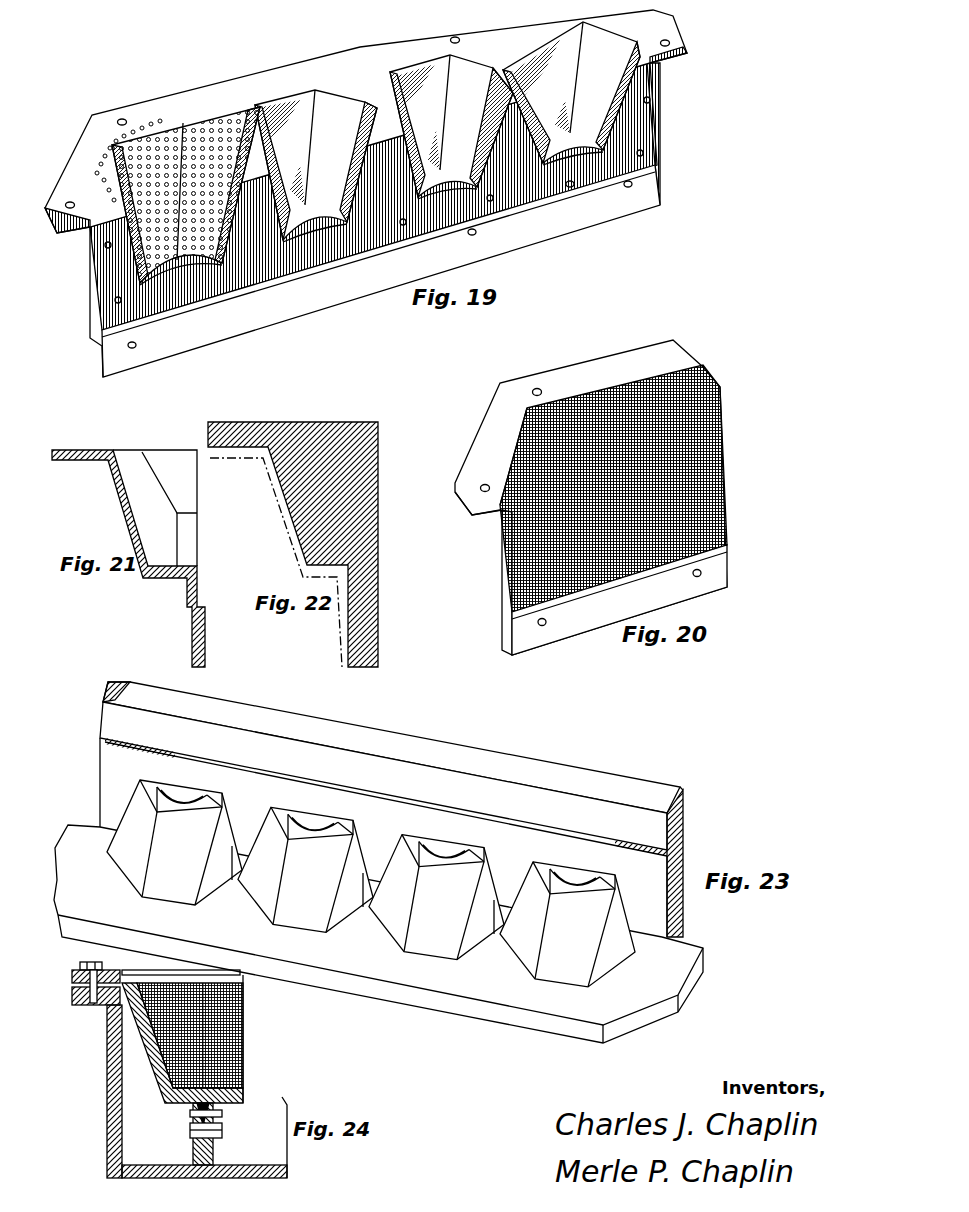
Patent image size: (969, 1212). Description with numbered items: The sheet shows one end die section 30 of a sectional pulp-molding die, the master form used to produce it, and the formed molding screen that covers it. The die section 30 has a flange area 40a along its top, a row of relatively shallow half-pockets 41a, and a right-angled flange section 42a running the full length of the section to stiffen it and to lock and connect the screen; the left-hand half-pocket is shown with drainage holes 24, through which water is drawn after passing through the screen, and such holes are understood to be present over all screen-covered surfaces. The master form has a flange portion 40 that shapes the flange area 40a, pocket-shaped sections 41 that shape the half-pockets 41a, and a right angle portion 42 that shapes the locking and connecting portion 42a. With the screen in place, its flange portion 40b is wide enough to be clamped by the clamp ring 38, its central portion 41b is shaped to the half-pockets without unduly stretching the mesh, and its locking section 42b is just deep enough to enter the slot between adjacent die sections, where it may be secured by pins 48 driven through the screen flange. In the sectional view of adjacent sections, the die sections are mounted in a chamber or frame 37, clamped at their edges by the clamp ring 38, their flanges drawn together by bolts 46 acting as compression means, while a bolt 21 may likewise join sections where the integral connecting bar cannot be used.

In FIG. 19, the bolt 21 is at (158, 230).
In FIG. 19, the holes 24 is at (112, 147).
In FIG. 19, the end die section 30 is at (232, 88).
In FIG. 24, the chamber or frame 37 is at (107, 1146).
In FIG. 24, the clamp ring 38 is at (72, 969).
In FIG. 22, the flange portion 40 is at (237, 430).
In FIG. 23, the flange portion 40 is at (630, 1000).
In FIG. 19, the flange area 40a is at (386, 119).
In FIG. 21, the flange area 40a is at (92, 441).
In FIG. 20, the flange area 40a is at (480, 443).
In FIG. 20, the flange portion of screen 40b is at (572, 402).
In FIG. 22, the pocket-shaped sections 41 is at (293, 530).
In FIG. 23, the pocket-shaped sections 41 is at (533, 943).
In FIG. 19, the half-pockets 41a is at (417, 73).
In FIG. 21, the half-pockets 41a is at (128, 546).
In FIG. 20, the central portion of screen covering 41b is at (642, 474).
In FIG. 24, the central portion of screen covering 41b is at (232, 1046).
In FIG. 22, the right angle portion 42 is at (311, 530).
In FIG. 23, the right angle portion 42 is at (655, 835).
In FIG. 19, the flange section 42a is at (640, 190).
In FIG. 21, the flange section 42a is at (128, 546).
In FIG. 24, the flange section 42a is at (205, 1134).
In FIG. 20, the locking section 42b is at (727, 543).
In FIG. 24, the bolts 46 is at (222, 1133).
In FIG. 24, the pins 48 is at (195, 1113).